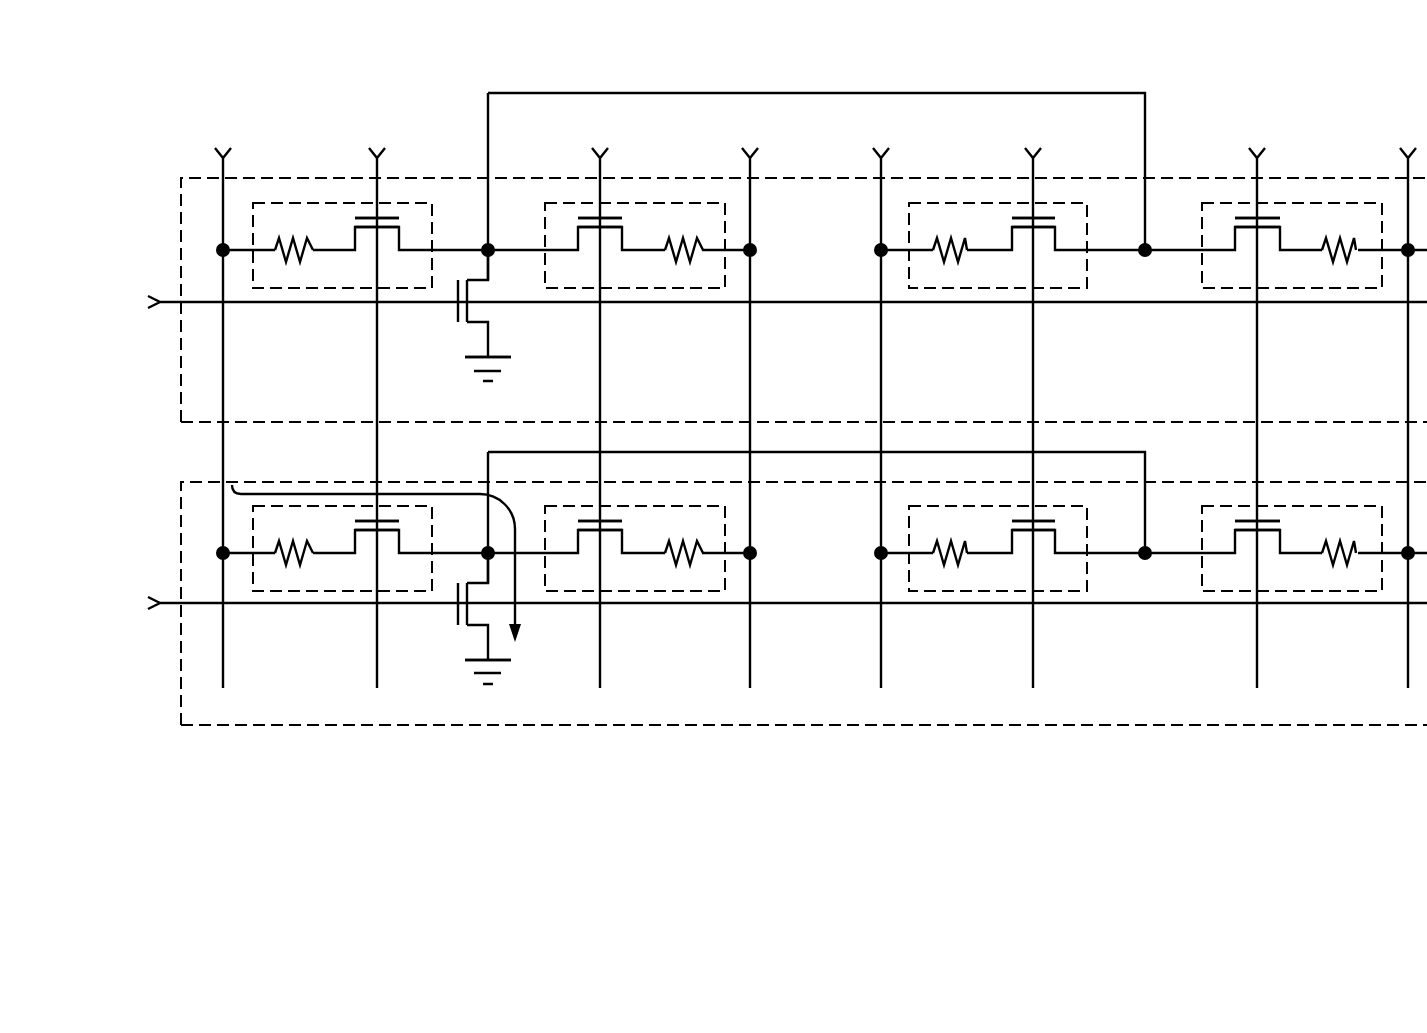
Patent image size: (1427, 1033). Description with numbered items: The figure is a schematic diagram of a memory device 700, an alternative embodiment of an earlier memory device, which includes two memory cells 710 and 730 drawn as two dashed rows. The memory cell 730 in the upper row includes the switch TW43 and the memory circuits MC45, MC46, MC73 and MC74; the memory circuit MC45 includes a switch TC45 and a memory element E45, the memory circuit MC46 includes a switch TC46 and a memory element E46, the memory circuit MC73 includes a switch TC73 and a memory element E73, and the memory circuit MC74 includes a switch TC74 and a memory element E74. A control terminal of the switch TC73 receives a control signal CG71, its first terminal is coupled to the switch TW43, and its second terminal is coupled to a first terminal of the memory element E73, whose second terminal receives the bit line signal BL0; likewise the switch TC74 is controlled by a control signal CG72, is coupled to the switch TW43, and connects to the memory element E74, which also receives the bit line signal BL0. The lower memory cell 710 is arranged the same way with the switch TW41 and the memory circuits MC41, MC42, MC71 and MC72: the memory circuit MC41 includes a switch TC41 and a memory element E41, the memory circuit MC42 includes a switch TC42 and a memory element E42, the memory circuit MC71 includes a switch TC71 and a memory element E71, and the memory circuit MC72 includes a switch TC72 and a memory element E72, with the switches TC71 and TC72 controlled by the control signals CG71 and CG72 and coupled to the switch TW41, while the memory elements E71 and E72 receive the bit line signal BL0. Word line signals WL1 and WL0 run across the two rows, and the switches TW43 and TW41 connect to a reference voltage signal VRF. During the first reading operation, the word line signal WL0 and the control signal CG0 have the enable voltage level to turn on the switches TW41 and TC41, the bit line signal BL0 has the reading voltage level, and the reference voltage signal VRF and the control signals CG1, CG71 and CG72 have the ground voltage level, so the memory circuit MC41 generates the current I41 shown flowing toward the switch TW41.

The memory device 700 is at (135, 53).
The memory cell 730 is at (181, 227).
The memory cell 710 is at (181, 510).
The bit line signal BL0 is at (812, 404).
The control signal CG0 is at (377, 404).
The control signal CG1 is at (600, 404).
The control signal CG71 is at (1033, 404).
The control signal CG72 is at (1257, 404).
The word line signal WL1 is at (757, 303).
The word line signal WL0 is at (757, 603).
The memory circuit MC45 is at (317, 288).
The memory circuit MC46 is at (645, 288).
The memory circuit MC73 is at (975, 288).
The memory circuit MC74 is at (1302, 288).
The memory circuit MC41 is at (317, 591).
The memory circuit MC42 is at (645, 591).
The memory circuit MC71 is at (975, 591).
The memory circuit MC72 is at (1302, 591).
The memory element E45 is at (293, 233).
The memory element E46 is at (684, 233).
The memory element E73 is at (952, 233).
The memory element E74 is at (1339, 233).
The memory element E41 is at (293, 537).
The memory element E42 is at (684, 537).
The memory element E71 is at (952, 537).
The memory element E72 is at (1339, 537).
The switch TC45 is at (372, 249).
The switch TC46 is at (596, 250).
The switch TC73 is at (1030, 249).
The switch TC74 is at (1252, 249).
The switch TC41 is at (372, 552).
The switch TC42 is at (596, 553).
The switch TC71 is at (1030, 552).
The switch TC72 is at (1252, 552).
The switch TW43 is at (464, 315).
The switch TW41 is at (464, 618).
The reference voltage signal VRF is at (486, 537).
The current I41 is at (446, 492).